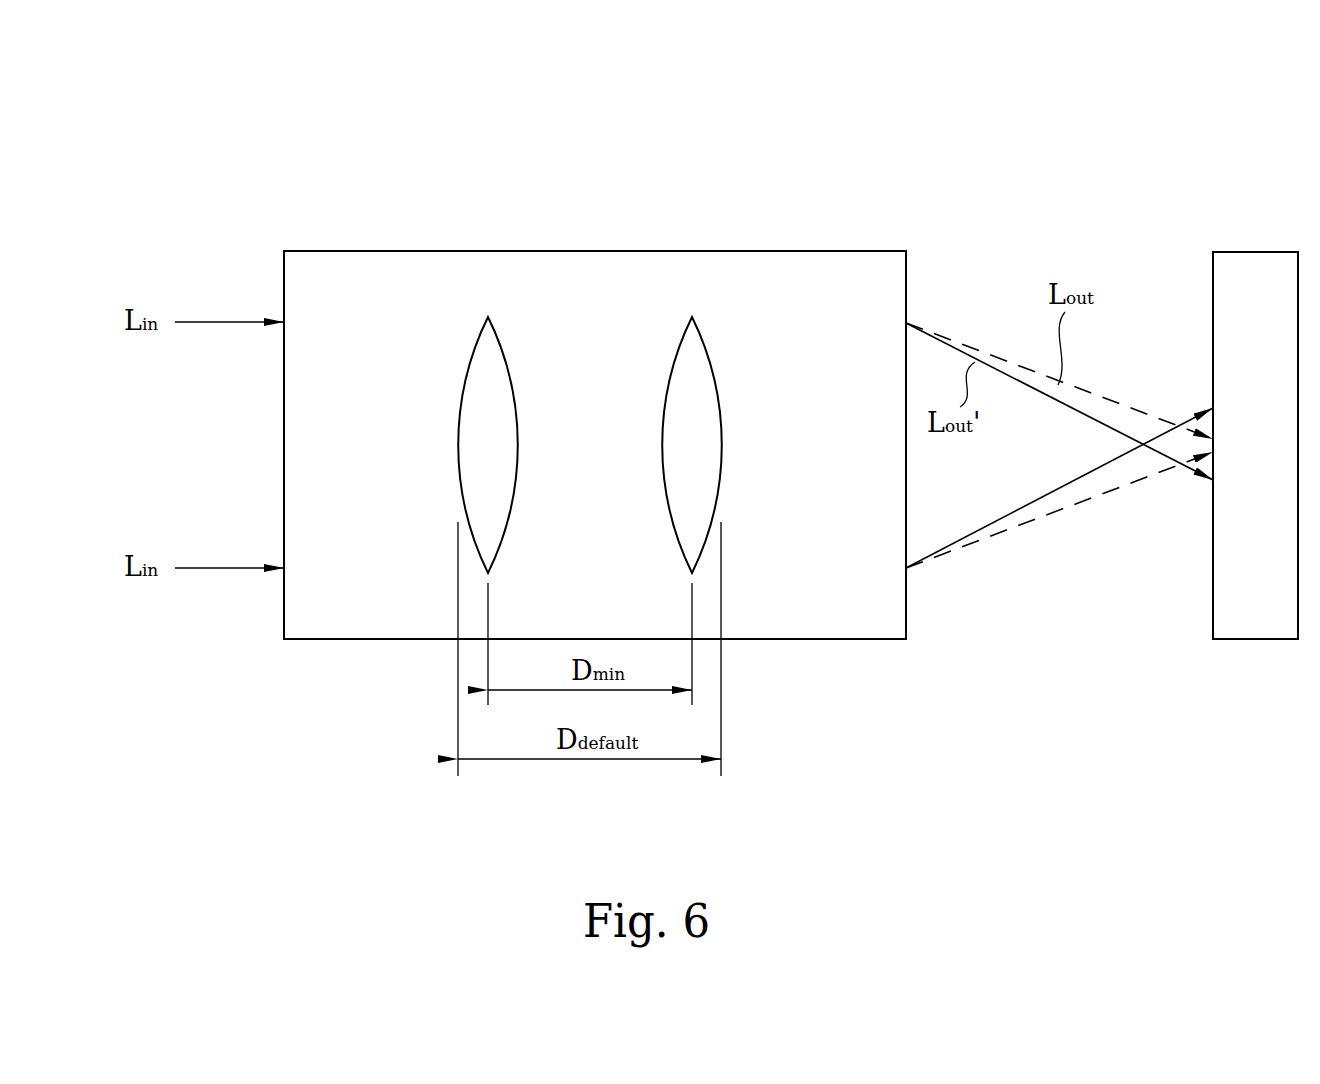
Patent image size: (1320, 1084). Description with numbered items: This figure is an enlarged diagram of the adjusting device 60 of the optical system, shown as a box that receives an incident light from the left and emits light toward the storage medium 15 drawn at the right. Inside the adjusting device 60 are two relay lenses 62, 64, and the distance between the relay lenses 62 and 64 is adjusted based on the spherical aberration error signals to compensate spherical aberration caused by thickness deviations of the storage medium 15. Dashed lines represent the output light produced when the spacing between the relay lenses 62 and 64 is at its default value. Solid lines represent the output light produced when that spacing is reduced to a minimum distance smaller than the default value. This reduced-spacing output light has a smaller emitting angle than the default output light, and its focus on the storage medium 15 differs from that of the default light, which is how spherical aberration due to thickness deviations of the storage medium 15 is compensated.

The adjusting device 60 is at (902, 165).
The relay lens 62 is at (497, 335).
The relay lens 64 is at (702, 335).
The storage medium 15 is at (1270, 452).